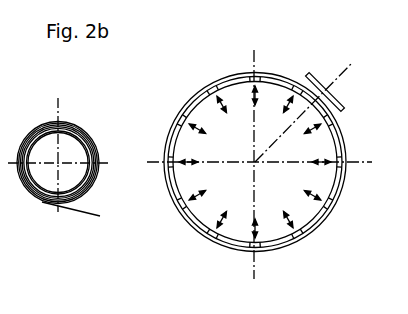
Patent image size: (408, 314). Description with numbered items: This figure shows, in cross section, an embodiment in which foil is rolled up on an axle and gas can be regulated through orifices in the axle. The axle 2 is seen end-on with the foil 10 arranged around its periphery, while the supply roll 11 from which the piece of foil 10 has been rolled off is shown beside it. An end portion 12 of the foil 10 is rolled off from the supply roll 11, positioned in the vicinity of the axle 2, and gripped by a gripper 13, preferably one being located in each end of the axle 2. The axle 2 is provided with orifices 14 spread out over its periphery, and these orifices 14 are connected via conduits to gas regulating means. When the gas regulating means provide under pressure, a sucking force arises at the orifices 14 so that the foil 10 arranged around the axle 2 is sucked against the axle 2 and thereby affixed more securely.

The axle 2 is at (215, 137).
The foil 10 is at (226, 76).
The supply roll 11 is at (72, 146).
The end portion 12 is at (297, 78).
The gripper 13 is at (334, 95).
The orifices 14 is at (221, 244).